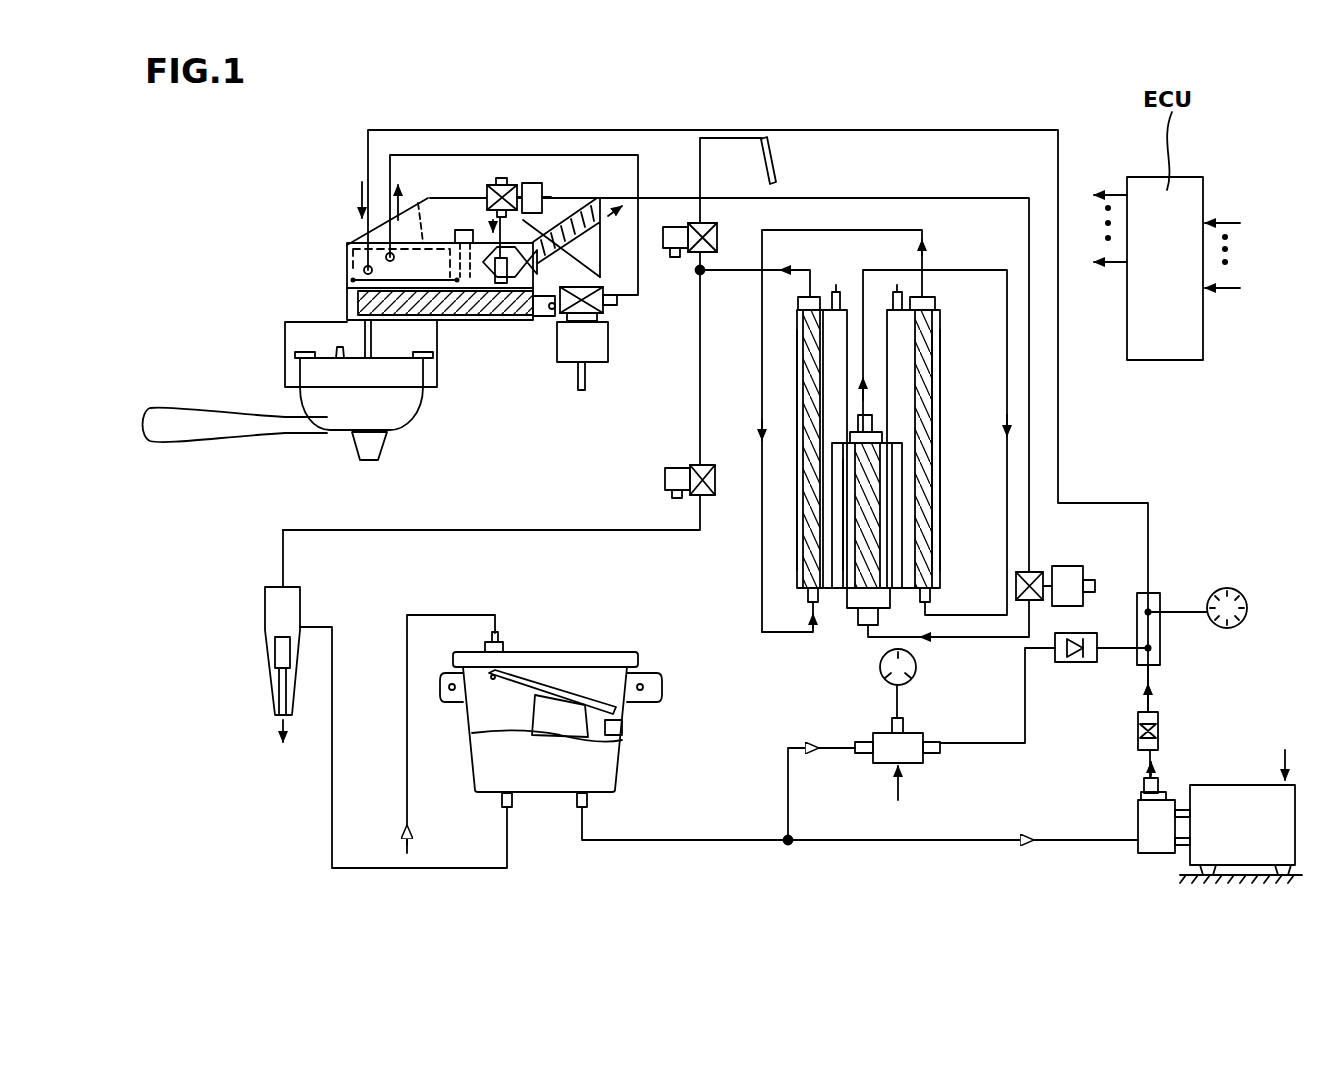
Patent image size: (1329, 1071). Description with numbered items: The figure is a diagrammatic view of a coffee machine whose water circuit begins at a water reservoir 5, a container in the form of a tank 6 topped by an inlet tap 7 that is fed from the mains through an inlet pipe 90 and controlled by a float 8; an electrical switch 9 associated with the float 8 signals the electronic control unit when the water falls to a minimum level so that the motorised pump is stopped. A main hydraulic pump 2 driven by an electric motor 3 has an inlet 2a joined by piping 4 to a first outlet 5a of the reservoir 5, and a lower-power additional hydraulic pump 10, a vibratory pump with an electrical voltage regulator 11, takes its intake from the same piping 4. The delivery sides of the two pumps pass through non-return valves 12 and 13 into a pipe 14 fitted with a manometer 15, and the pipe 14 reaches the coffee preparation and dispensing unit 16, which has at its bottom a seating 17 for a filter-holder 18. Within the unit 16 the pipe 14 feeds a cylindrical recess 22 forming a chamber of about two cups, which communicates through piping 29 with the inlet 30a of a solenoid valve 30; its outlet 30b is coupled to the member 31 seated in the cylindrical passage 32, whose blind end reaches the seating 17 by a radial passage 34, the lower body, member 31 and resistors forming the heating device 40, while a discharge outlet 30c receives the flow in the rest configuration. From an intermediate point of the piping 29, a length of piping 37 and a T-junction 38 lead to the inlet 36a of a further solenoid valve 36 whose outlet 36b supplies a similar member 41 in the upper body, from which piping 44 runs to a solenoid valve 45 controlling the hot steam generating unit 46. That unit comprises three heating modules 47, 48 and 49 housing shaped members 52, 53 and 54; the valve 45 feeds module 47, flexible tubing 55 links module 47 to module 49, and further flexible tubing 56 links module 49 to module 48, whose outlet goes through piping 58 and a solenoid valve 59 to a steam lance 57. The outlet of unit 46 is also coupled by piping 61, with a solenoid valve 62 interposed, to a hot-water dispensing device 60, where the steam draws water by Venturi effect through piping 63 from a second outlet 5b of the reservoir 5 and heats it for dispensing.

The main hydraulic pump 2 is at (1148, 815).
The inlet 2a is at (1137, 838).
The electric motor 3 is at (1230, 813).
The piping 4 is at (723, 837).
The water reservoir 5 is at (587, 640).
The first outlet 5a is at (583, 813).
The second outlet 5b is at (507, 817).
The tank 6 is at (482, 720).
The inlet tap 7 is at (510, 647).
The float 8 is at (563, 720).
The electrical switch 9 is at (622, 730).
The additional hydraulic pump 10 is at (913, 738).
The electrical voltage regulator 11 is at (880, 668).
The non-return valve 12 is at (1160, 727).
The non-return valve 13 is at (1079, 663).
The pipe 14 is at (397, 130).
The manometer 15 is at (1243, 590).
The unit for the preparation and dispensing of coffee 16 is at (495, 364).
The seating 17 is at (427, 388).
The filter-holder 18 is at (340, 410).
The cylindrical recess 22 is at (422, 206).
The piping 29 is at (440, 155).
The solenoid valve 30 is at (601, 372).
The inlet 30a is at (608, 340).
The outlet 30b is at (547, 323).
The discharge outlet 30c is at (581, 392).
The member 31 is at (404, 278).
The cylindrical passage 32 is at (465, 318).
The radial passage 34 is at (347, 313).
The solenoid valve 36 is at (522, 176).
The inlet 36a is at (522, 168).
The outlet 36b is at (518, 213).
The length of piping 37 is at (497, 179).
The T-junction 38 is at (501, 183).
The heating device 40 is at (477, 266).
The member 41 is at (600, 277).
The piping 44 is at (615, 198).
The solenoid valve 45 is at (1090, 553).
The unit for generating hot steam 46 is at (777, 557).
The heating module 47 is at (853, 560).
The heating module 48 is at (797, 376).
The heating module 49 is at (940, 380).
The shaped member 52 is at (870, 520).
The shaped member 53 is at (810, 348).
The shaped member 54 is at (922, 487).
The flexible tubing 55 is at (1007, 332).
The flexible tubing 56 is at (845, 230).
The lance 57 is at (775, 160).
The piping 58 is at (740, 268).
The solenoid valve 59 is at (677, 224).
The device for the dispensing of hot water 60 is at (250, 667).
The piping 61 is at (543, 528).
The solenoid valve 62 is at (688, 478).
The piping 63 is at (333, 758).
The inlet pipe 90 is at (455, 615).